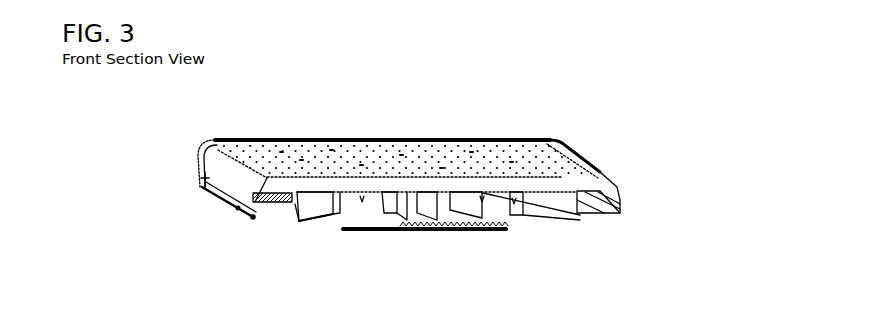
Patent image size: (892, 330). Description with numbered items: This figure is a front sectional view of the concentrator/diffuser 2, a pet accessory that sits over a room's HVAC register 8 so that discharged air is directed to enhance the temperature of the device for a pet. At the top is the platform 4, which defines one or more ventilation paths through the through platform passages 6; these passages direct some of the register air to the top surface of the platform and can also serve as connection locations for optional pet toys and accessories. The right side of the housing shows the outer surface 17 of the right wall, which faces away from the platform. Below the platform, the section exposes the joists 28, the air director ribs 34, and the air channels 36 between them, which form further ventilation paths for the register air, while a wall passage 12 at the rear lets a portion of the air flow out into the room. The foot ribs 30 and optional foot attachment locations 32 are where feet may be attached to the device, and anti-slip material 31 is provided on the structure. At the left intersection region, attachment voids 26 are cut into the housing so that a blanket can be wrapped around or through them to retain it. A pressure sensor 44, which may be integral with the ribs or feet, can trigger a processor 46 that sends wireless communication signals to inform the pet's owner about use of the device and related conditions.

The concentrator/diffuser 2 is at (371, 113).
The platform 4 is at (430, 150).
The through platform passages 6 is at (273, 155).
The register 8 is at (455, 232).
The wall passage 12 is at (527, 221).
The outer surface of right wall 17 is at (560, 150).
The attachment voids 26 is at (207, 190).
The joists 28 is at (580, 215).
The foot ribs 30 is at (296, 206).
The anti-slip material 31 is at (303, 214).
The foot attachment locations 32 is at (200, 181).
The air director ribs 34 is at (333, 213).
The air channels 36 is at (362, 208).
The pressure sensor 44 is at (238, 209).
The processor 46 is at (252, 217).